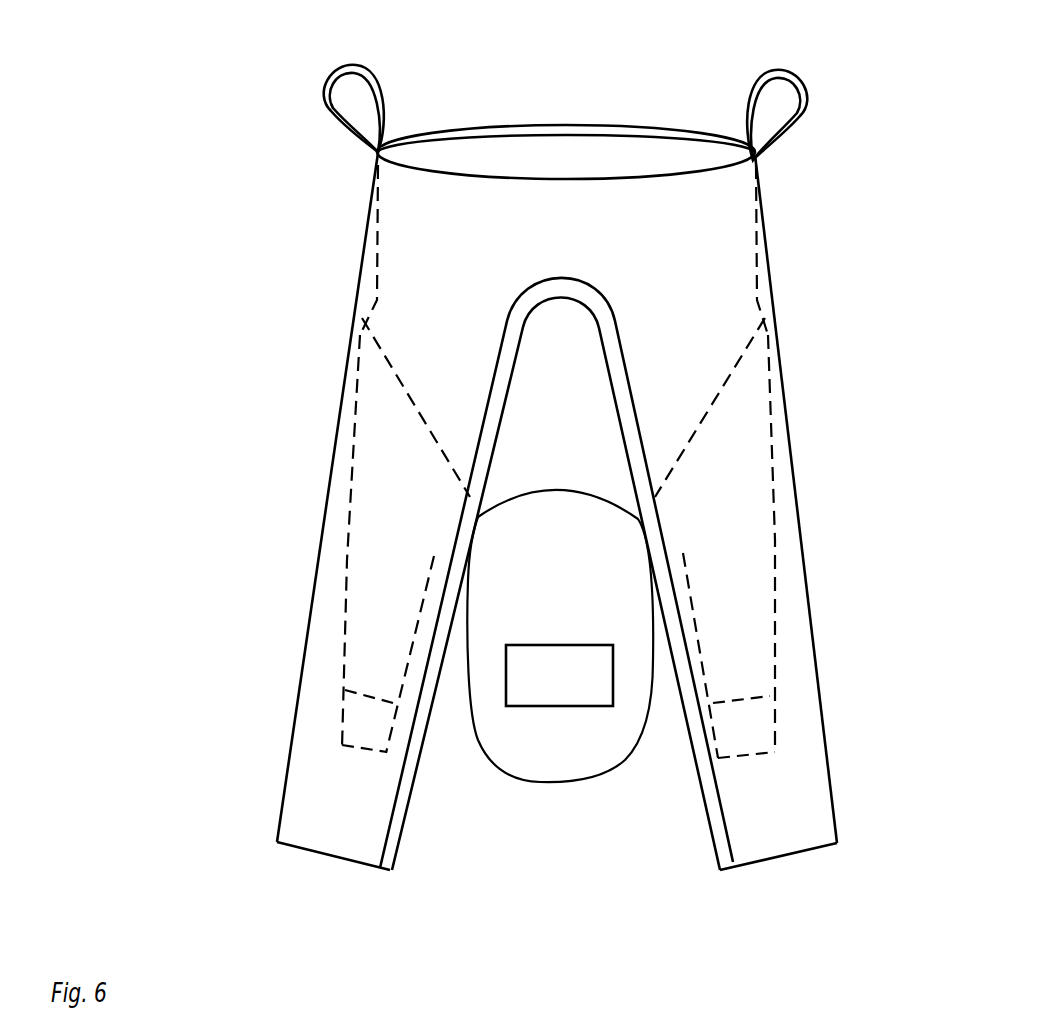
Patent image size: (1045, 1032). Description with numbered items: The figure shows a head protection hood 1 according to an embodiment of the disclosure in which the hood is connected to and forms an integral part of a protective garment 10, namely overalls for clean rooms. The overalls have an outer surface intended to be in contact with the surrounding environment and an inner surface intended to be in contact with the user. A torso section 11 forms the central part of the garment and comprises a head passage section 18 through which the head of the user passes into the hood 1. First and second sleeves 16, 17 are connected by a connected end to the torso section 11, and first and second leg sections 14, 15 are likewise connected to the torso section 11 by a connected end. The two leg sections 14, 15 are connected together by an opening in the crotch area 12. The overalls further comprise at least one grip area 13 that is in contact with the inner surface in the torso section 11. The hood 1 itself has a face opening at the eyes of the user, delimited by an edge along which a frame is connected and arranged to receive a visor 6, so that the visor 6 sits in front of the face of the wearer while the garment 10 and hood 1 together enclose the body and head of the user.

The hood 1 is at (540, 782).
The visor 6 is at (557, 682).
The protective garment 10 is at (579, 234).
The torso section 11 is at (556, 574).
The crotch area opening 12 is at (547, 162).
The grip area 13 is at (330, 84).
The first leg section 14 is at (308, 622).
The second leg section 15 is at (797, 683).
The first sleeve 16 is at (367, 550).
The second sleeve 17 is at (750, 580).
The head passage section 18 is at (584, 544).